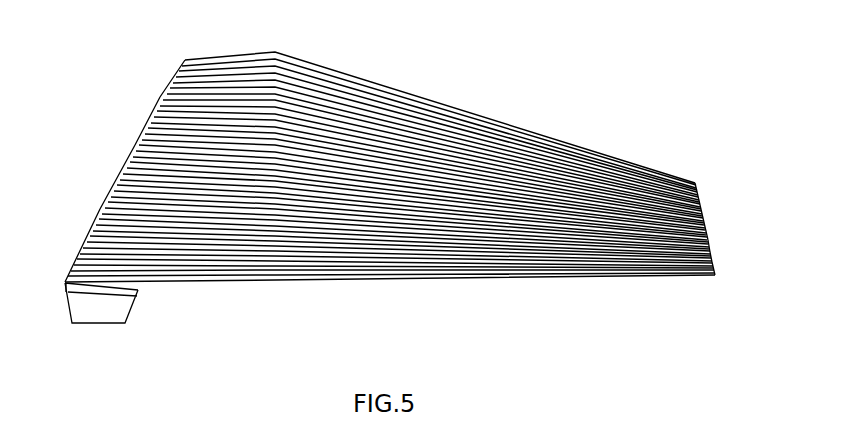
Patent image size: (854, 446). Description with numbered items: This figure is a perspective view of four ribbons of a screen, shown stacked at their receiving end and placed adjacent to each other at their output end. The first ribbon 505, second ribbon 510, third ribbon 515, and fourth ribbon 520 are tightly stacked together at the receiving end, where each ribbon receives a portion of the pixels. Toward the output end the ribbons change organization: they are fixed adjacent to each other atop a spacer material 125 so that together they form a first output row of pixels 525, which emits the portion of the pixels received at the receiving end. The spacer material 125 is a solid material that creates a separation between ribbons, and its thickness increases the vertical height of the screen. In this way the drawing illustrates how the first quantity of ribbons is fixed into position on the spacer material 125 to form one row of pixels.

The first ribbon 505 is at (160, 97).
The second ribbon 510 is at (135, 145).
The third ribbon 515 is at (100, 207).
The fourth ribbon 520 is at (62, 280).
The first output row of pixels 525 is at (67, 291).
The spacer material 125 is at (100, 312).